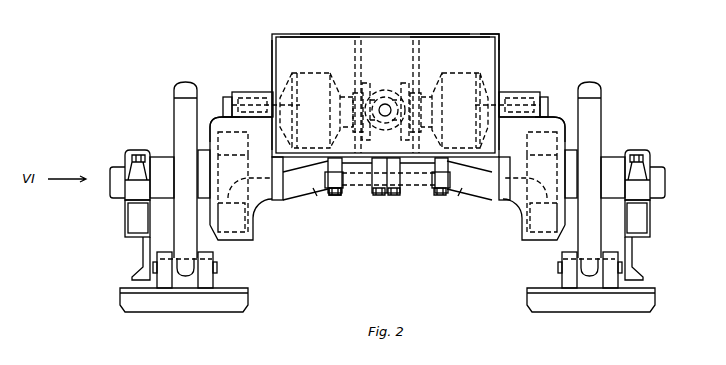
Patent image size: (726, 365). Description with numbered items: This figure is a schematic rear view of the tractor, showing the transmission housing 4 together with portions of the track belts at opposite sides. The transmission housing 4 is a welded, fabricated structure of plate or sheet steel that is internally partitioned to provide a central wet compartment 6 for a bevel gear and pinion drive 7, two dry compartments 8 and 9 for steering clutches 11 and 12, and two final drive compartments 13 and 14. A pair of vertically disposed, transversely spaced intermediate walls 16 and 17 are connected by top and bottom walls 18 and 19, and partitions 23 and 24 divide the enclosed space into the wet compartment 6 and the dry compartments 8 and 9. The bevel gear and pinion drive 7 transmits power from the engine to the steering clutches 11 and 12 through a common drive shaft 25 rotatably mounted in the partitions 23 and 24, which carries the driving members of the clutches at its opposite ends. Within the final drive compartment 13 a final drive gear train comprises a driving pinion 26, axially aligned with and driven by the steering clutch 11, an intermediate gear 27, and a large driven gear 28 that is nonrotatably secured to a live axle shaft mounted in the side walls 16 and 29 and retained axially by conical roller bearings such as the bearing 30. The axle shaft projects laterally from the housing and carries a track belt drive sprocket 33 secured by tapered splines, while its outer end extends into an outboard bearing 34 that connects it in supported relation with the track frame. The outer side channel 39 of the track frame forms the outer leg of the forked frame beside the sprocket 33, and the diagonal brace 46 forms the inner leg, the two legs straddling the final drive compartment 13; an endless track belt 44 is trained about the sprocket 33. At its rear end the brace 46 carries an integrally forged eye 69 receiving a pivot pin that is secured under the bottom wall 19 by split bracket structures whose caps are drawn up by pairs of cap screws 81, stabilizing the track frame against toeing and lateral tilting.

The transmission housing 4 is at (428, 37).
The central wet compartment 6 is at (393, 45).
The bevel gear and pinion drive 7 is at (372, 89).
The dry compartment 8 is at (318, 44).
The dry compartment 9 is at (461, 47).
The steering clutch 11 is at (309, 77).
The steering clutch 12 is at (468, 79).
The final drive compartment 13 is at (224, 103).
The final drive compartment 14 is at (545, 101).
The intermediate wall 16 is at (271, 52).
The intermediate wall 17 is at (500, 58).
The top wall 18 is at (486, 36).
The bottom wall 19 is at (308, 167).
The partition 23 is at (354, 58).
The partition 24 is at (421, 63).
The common drive shaft 25 is at (398, 112).
The driving pinion 26 is at (258, 92).
The intermediate gear 27 is at (387, 187).
The large driven gear 28 is at (245, 243).
The side wall 29 is at (216, 136).
The conical roller bearing 30 is at (286, 198).
The track belt drive sprocket 33 is at (176, 110).
The outboard bearing 34 is at (141, 150).
The outer side channel 39 is at (125, 222).
The endless track belt 44 is at (243, 303).
The diagonal brace 46 is at (390, 201).
The eye 69 is at (348, 196).
The cap screws 81 is at (335, 196).